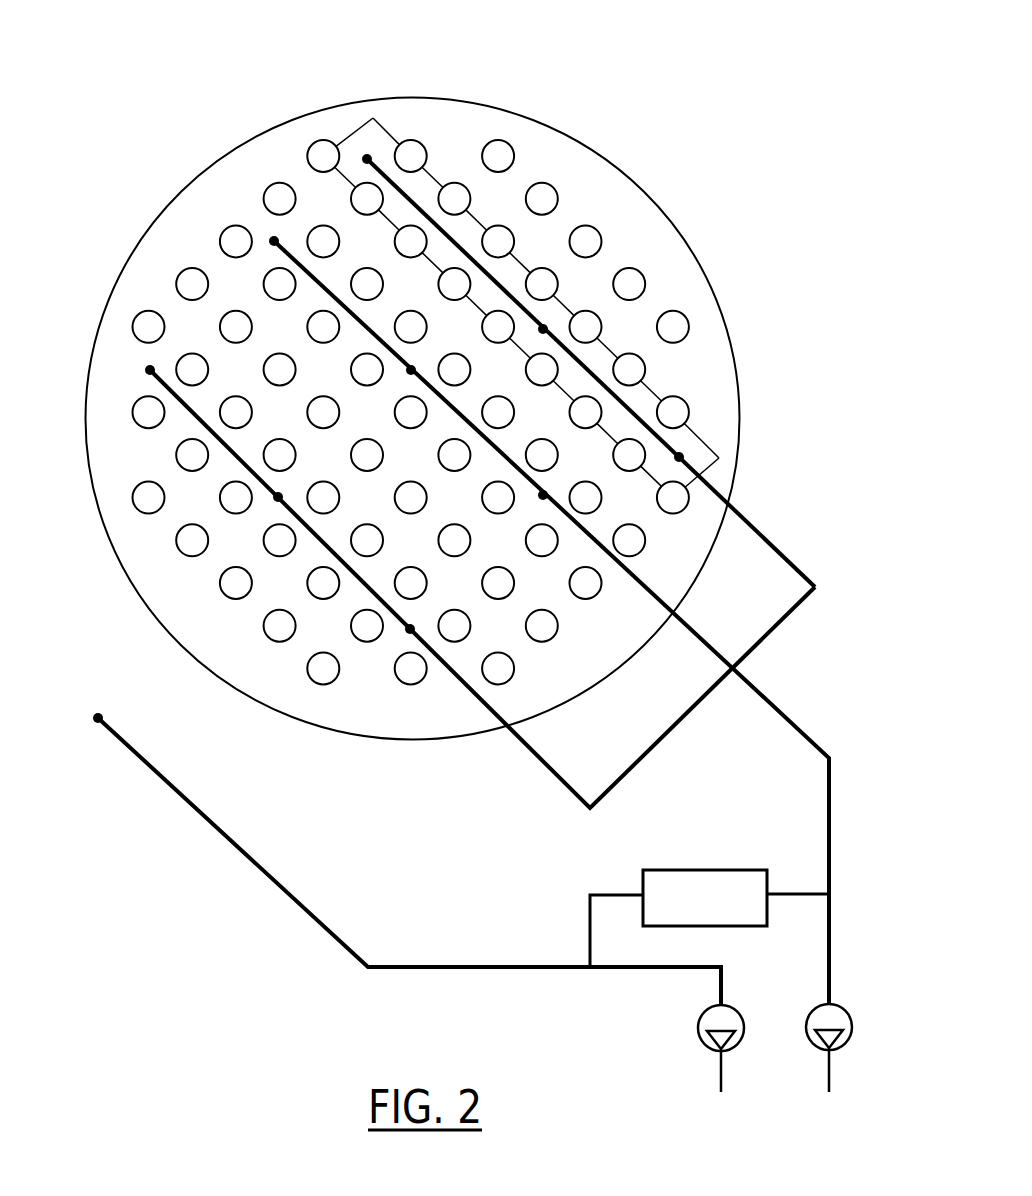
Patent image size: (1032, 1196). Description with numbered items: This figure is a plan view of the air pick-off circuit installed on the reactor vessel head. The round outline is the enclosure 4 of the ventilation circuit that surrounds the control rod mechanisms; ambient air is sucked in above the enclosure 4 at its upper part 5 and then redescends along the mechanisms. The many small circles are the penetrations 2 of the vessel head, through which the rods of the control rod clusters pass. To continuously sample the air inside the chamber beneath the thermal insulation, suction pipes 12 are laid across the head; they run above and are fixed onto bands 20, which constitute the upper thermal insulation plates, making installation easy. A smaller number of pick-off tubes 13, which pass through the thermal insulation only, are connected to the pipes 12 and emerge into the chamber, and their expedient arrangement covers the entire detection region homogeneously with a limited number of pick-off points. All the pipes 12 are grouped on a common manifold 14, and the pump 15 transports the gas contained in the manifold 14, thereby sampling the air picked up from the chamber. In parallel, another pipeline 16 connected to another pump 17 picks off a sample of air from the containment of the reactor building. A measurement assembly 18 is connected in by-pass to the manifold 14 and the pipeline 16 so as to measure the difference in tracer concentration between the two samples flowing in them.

The penetrations 2 is at (524, 133).
The enclosure 4 is at (181, 171).
The upper part 5 is at (640, 208).
The pipes 12 is at (790, 515).
The tubes 13 is at (131, 354).
The common manifold 14 is at (798, 710).
The pump 15 is at (865, 1028).
The pipeline 16 is at (238, 872).
The pump 17 is at (677, 1033).
The measurement assembly 18 is at (707, 851).
The bands 20 is at (373, 115).